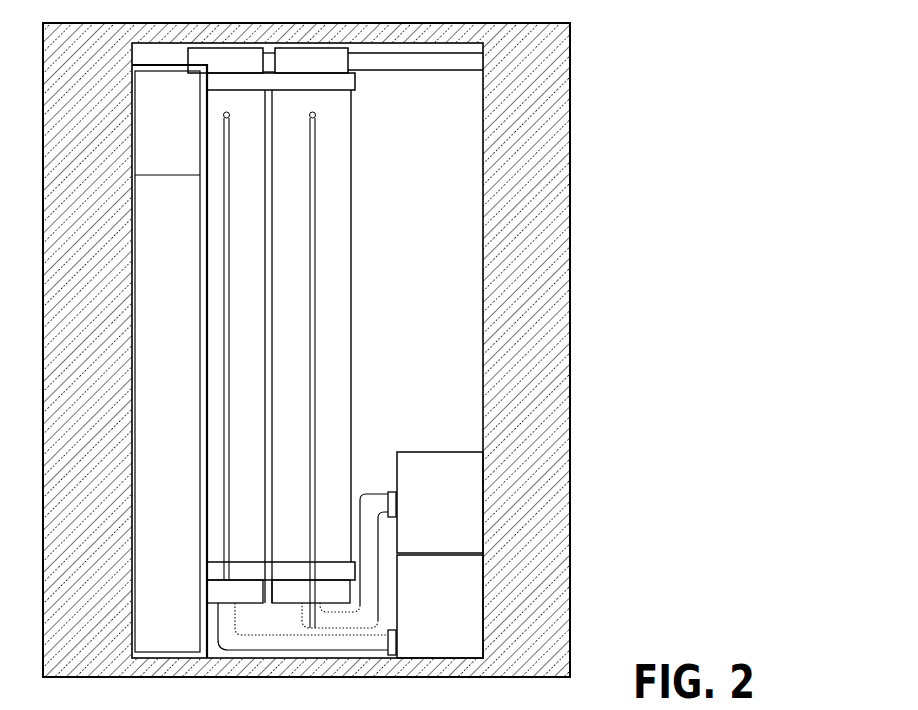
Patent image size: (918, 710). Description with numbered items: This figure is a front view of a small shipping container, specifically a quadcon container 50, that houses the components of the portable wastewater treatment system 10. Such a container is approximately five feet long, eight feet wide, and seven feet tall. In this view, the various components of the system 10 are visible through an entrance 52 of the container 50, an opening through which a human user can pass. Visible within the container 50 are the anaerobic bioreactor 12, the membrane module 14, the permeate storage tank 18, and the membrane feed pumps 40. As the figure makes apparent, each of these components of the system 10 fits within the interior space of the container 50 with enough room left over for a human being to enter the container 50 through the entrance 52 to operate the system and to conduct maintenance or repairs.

The portable wastewater treatment system 10 is at (618, 73).
The anaerobic bioreactor 12 is at (428, 274).
The membrane module 14 is at (247, 70).
The permeate storage tank 18 is at (178, 361).
The membrane feed pumps 40 is at (452, 516).
The quadcon container 50 is at (553, 305).
The entrance 52 is at (464, 227).